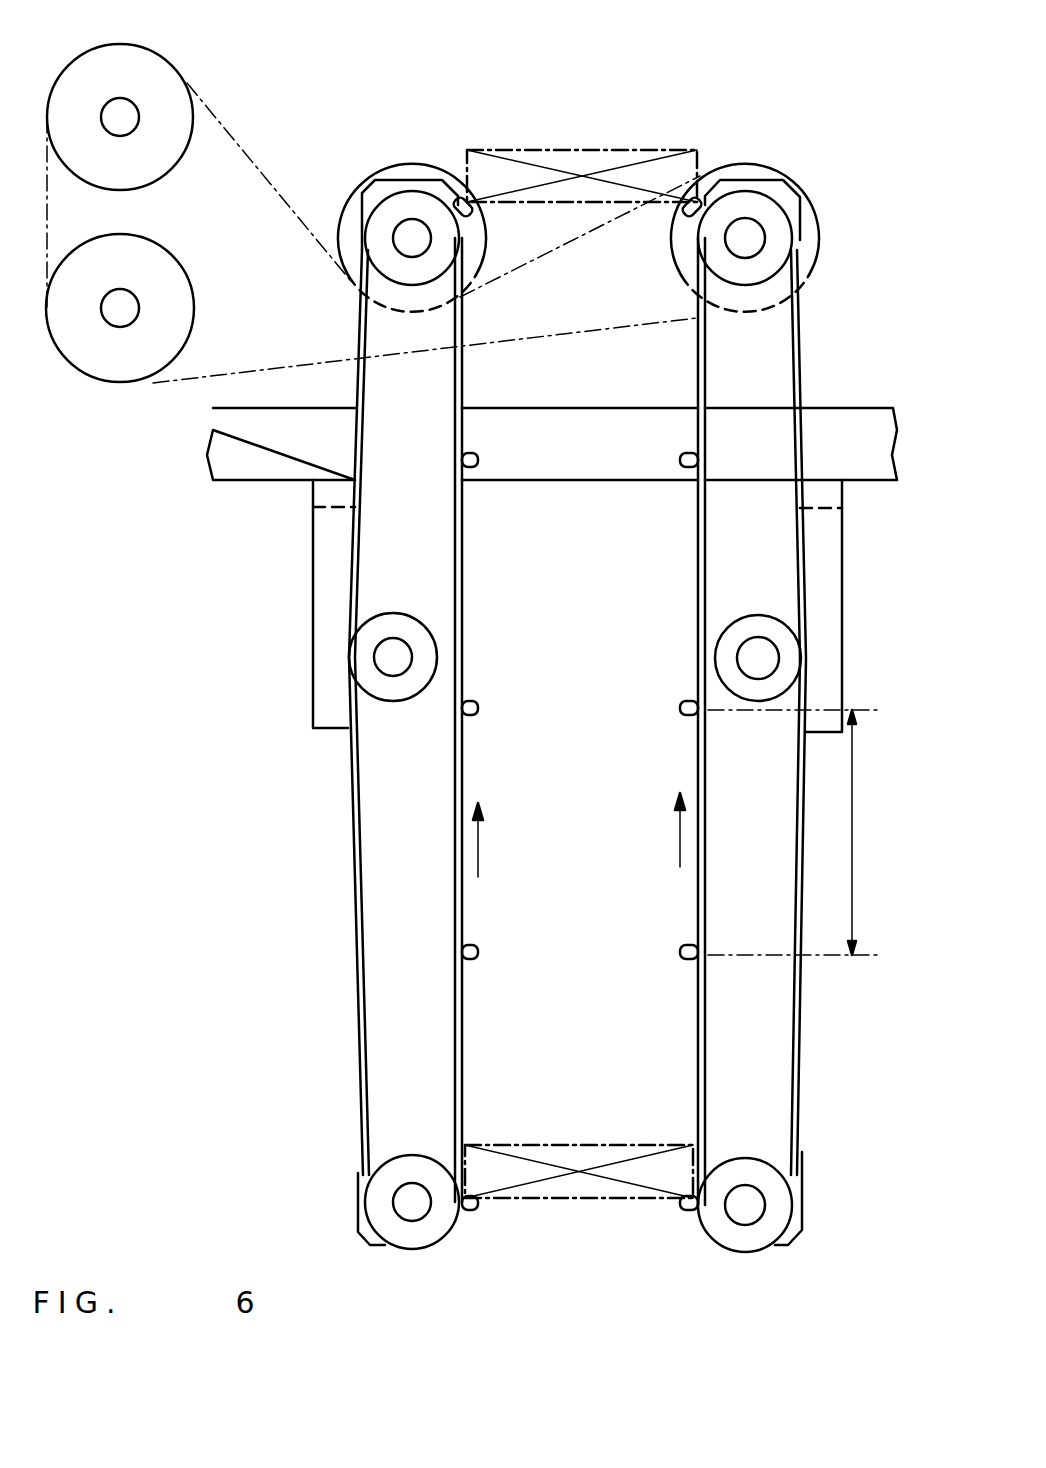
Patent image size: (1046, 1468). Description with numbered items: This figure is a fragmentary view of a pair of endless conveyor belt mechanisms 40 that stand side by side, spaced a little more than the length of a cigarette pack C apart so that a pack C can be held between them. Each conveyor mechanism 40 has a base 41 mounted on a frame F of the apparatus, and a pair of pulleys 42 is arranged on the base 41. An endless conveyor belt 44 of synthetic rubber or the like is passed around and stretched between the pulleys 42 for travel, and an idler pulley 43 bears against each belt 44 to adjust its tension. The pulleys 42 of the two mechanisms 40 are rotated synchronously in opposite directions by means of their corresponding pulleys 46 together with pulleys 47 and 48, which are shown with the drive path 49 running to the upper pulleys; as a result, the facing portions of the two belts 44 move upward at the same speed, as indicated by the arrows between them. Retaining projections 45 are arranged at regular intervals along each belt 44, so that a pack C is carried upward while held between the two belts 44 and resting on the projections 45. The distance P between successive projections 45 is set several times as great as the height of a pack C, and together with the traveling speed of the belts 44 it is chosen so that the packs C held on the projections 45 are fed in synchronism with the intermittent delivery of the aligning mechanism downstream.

The endless conveyor belt mechanism 40 is at (326, 926).
The base 41 is at (393, 182).
The pulley 42 is at (425, 195).
The idler pulley 43 is at (355, 654).
The endless conveyor belt 44 is at (698, 1060).
The retaining projection 45 is at (472, 200).
The pulley 46 is at (345, 200).
The pulley 47 is at (160, 57).
The pulley 48 is at (115, 383).
The tape 49 is at (243, 95).
The cigarette pack C is at (632, 145).
The frame F is at (830, 420).
The distance between retaining projections P is at (794, 832).